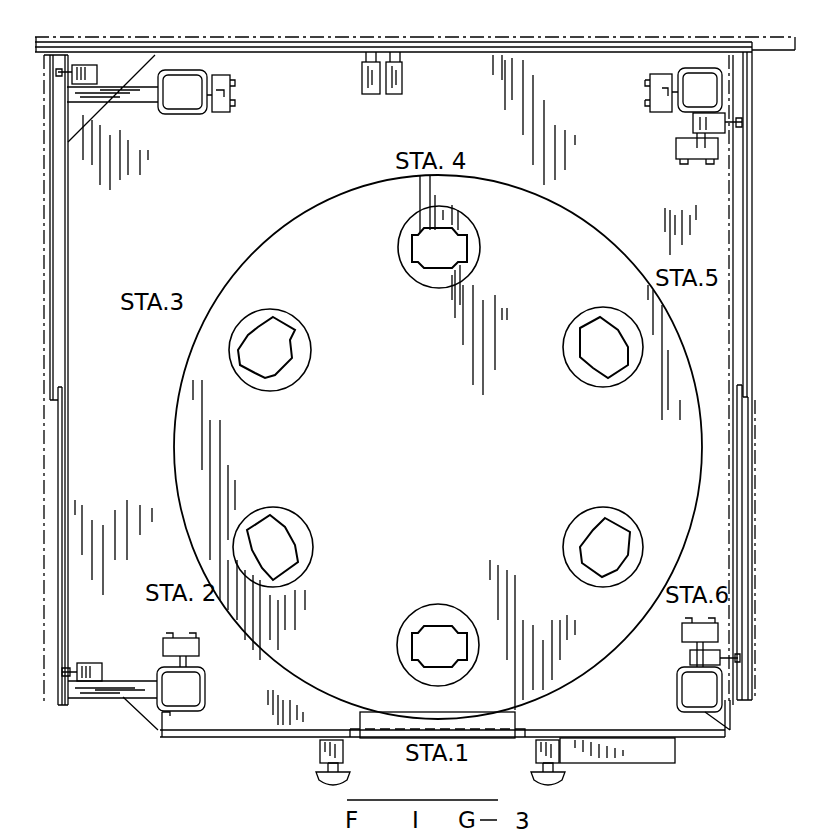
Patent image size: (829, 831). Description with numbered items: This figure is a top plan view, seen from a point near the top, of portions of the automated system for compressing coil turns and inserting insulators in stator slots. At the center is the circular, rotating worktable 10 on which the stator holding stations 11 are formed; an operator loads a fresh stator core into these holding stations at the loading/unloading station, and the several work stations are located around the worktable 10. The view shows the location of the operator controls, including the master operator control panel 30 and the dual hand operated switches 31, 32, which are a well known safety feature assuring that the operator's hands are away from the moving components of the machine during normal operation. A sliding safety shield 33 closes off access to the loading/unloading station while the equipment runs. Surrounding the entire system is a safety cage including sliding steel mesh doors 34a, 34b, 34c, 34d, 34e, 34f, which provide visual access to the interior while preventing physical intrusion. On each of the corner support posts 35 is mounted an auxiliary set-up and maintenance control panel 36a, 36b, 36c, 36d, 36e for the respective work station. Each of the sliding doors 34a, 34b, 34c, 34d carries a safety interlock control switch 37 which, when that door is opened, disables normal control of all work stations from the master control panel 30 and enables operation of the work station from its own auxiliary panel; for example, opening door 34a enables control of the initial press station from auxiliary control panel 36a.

The worktable 10 is at (620, 212).
The stator holding stations 11 is at (438, 268).
The master operator control panel 30 is at (618, 763).
The hand operated switch 31 is at (548, 778).
The hand operated switch 32 is at (328, 778).
The sliding safety shield 33 is at (497, 740).
The sliding steel mesh door 34a is at (68, 487).
The sliding steel mesh door 34b is at (68, 204).
The sliding steel mesh door 34c is at (200, 40).
The sliding steel mesh door 34d is at (532, 40).
The sliding steel mesh door 34e is at (762, 194).
The sliding steel mesh door 34f is at (760, 481).
The corner support post 35 is at (170, 116).
The auxiliary set-up and maintenance control panel 36a is at (199, 646).
The auxiliary set-up and maintenance control panel 36b is at (230, 95).
The auxiliary set-up and maintenance control panel 36c is at (655, 91).
The auxiliary set-up and maintenance control panel 36d is at (696, 160).
The auxiliary set-up and maintenance control panel 36e is at (682, 632).
The safety interlock control switch 37 is at (85, 65).